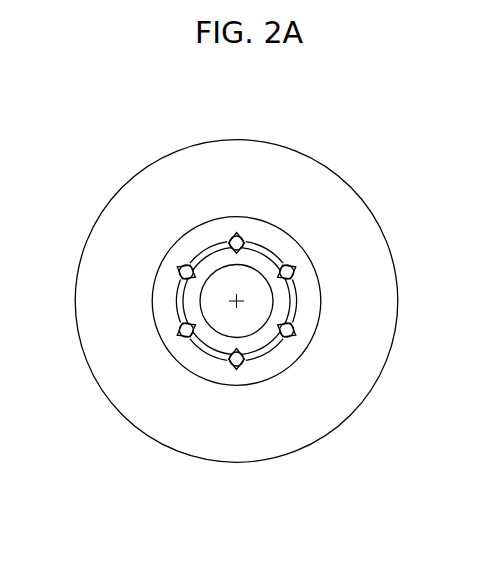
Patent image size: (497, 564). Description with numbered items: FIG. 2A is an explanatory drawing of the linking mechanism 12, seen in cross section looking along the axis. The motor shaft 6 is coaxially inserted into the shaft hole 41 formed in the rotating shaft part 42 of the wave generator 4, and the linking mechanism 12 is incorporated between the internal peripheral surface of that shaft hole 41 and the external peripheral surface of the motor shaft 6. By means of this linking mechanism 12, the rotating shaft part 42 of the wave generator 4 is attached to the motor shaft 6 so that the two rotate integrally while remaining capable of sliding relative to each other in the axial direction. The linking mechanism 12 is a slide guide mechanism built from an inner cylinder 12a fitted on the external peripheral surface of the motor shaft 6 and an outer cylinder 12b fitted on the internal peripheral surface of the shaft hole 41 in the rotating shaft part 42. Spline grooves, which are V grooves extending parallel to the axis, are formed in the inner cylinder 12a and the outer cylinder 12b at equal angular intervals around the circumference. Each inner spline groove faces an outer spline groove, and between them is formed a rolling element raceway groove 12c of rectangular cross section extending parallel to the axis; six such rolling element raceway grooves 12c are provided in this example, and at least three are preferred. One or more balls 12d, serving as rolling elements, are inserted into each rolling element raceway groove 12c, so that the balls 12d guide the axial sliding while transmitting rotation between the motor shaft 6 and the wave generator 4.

The wave generator 4 is at (356, 412).
The shaft hole 41 is at (288, 365).
The rotating shaft part 42 is at (304, 403).
The motor shaft 6 is at (275, 300).
The linking mechanism 12 is at (185, 103).
The inner cylinder 12a is at (186, 296).
The outer cylinder 12b is at (188, 249).
The rolling element raceway grooves 12c is at (227, 242).
The balls 12d is at (239, 242).